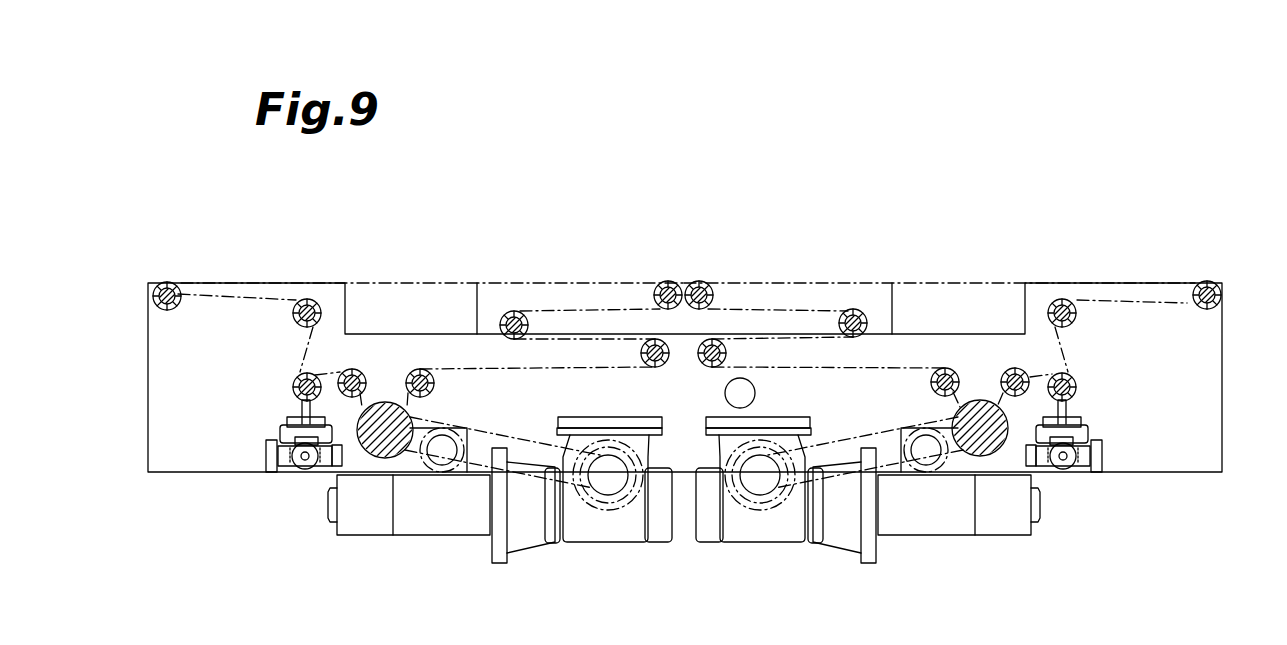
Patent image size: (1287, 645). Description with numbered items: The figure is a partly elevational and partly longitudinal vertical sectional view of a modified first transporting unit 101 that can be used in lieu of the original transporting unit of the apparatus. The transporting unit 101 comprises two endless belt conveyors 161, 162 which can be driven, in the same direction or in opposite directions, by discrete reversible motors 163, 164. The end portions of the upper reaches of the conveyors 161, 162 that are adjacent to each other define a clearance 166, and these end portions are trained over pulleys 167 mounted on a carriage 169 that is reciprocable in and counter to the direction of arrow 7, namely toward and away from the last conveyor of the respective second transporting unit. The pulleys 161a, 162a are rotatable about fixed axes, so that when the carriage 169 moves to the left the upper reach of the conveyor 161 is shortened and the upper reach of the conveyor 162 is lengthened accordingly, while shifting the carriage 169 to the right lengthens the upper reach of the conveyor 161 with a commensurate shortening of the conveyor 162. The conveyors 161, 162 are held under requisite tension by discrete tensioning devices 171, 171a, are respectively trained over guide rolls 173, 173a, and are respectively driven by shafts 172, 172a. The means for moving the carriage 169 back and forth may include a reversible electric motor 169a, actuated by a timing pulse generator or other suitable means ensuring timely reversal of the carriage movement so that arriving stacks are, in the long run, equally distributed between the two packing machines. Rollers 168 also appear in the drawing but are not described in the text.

The modified first transporting unit 101 is at (770, 218).
The arrow 7 is at (1108, 262).
The endless belt conveyor 161 is at (423, 278).
The pulley 161a is at (188, 283).
The endless belt conveyor 162 is at (957, 282).
The pulley 162a is at (1197, 310).
The reversible motor 163 is at (539, 557).
The reversible motor 164 is at (834, 557).
The clearance 166 is at (688, 270).
The pulleys 167 is at (708, 282).
The guide rollers 168 is at (515, 311).
The carriage 169 is at (815, 297).
The reversible electric motor 169a is at (757, 396).
The tensioning device 171 is at (297, 484).
The tensioning device 171a is at (1066, 486).
The shaft 172 is at (376, 462).
The shaft 172a is at (1000, 458).
The guide rolls 173 is at (296, 323).
The guide rolls 173a is at (1092, 392).